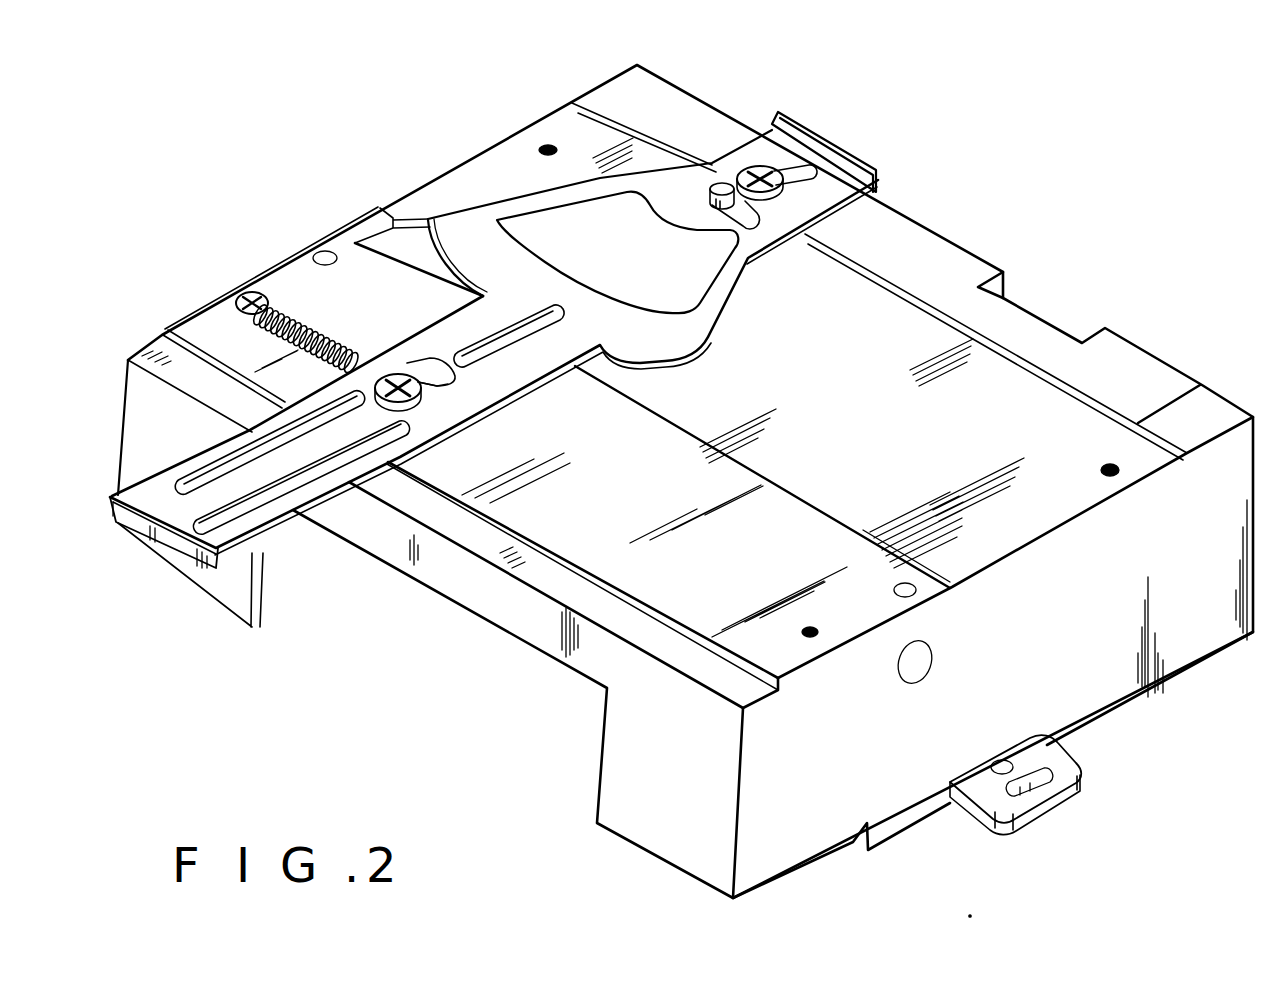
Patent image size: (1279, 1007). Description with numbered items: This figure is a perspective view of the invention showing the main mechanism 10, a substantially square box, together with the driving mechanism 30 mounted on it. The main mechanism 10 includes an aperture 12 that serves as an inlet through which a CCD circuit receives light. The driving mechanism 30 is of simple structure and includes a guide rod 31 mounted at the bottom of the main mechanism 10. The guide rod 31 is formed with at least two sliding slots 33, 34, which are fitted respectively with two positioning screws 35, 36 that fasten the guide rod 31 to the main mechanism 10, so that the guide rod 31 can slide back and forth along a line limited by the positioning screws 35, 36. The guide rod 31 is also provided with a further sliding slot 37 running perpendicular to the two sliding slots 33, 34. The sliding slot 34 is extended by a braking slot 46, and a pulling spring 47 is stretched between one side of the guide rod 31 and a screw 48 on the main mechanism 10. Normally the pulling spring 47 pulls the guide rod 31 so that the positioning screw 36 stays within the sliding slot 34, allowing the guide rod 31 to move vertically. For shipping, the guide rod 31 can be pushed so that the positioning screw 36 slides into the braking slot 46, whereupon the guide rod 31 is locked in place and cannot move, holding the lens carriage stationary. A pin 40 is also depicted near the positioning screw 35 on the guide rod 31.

The main mechanism 10 is at (1200, 653).
The aperture 12 is at (445, 607).
The driving mechanism 30 is at (504, 118).
The guide rod 31 is at (280, 520).
The sliding slot 33 is at (807, 170).
The sliding slot 34 is at (435, 391).
The positioning screw 35 is at (757, 166).
The positioning screw 36 is at (395, 372).
The sliding slot 37 is at (748, 226).
The pin 40 is at (722, 184).
The braking slot 46 is at (416, 355).
The pulling spring 47 is at (300, 318).
The screw 48 is at (243, 293).